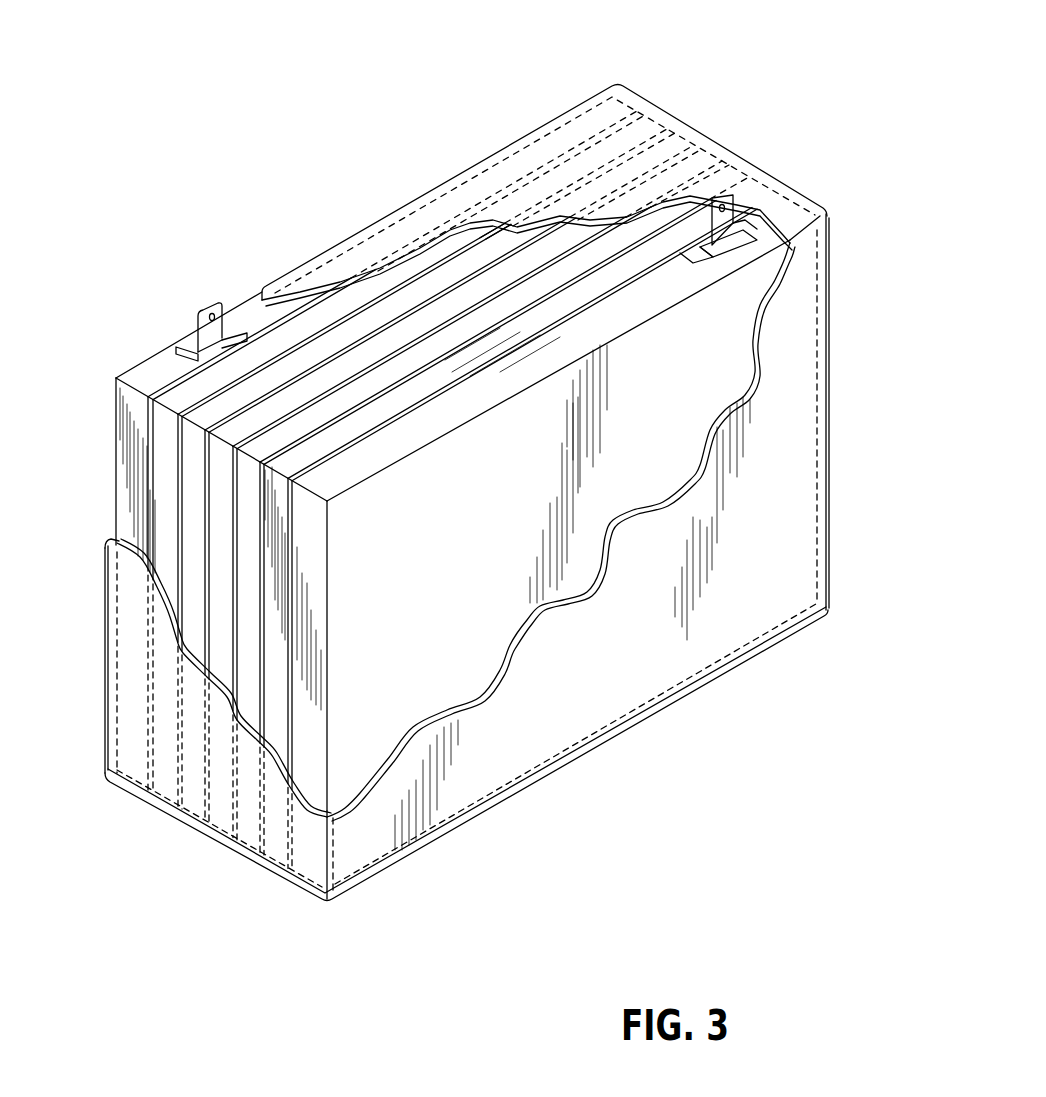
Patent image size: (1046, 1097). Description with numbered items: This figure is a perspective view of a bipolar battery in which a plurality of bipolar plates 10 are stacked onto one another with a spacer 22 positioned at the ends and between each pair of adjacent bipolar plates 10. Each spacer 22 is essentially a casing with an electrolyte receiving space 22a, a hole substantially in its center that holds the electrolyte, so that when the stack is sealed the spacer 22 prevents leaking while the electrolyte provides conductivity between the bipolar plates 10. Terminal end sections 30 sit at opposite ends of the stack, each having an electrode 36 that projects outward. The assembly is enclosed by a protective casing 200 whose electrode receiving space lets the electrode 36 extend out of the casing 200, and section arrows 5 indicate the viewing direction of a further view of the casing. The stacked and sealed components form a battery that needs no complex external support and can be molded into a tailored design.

The terminal end section 30 is at (113, 360).
The protective casing 200 is at (828, 208).
The spacer 22 is at (260, 429).
The electrolyte receiving space 22a is at (517, 243).
The bipolar plate 10 is at (245, 539).
The electrode 36 is at (213, 302).
The section line FIG. 5 is at (218, 250).